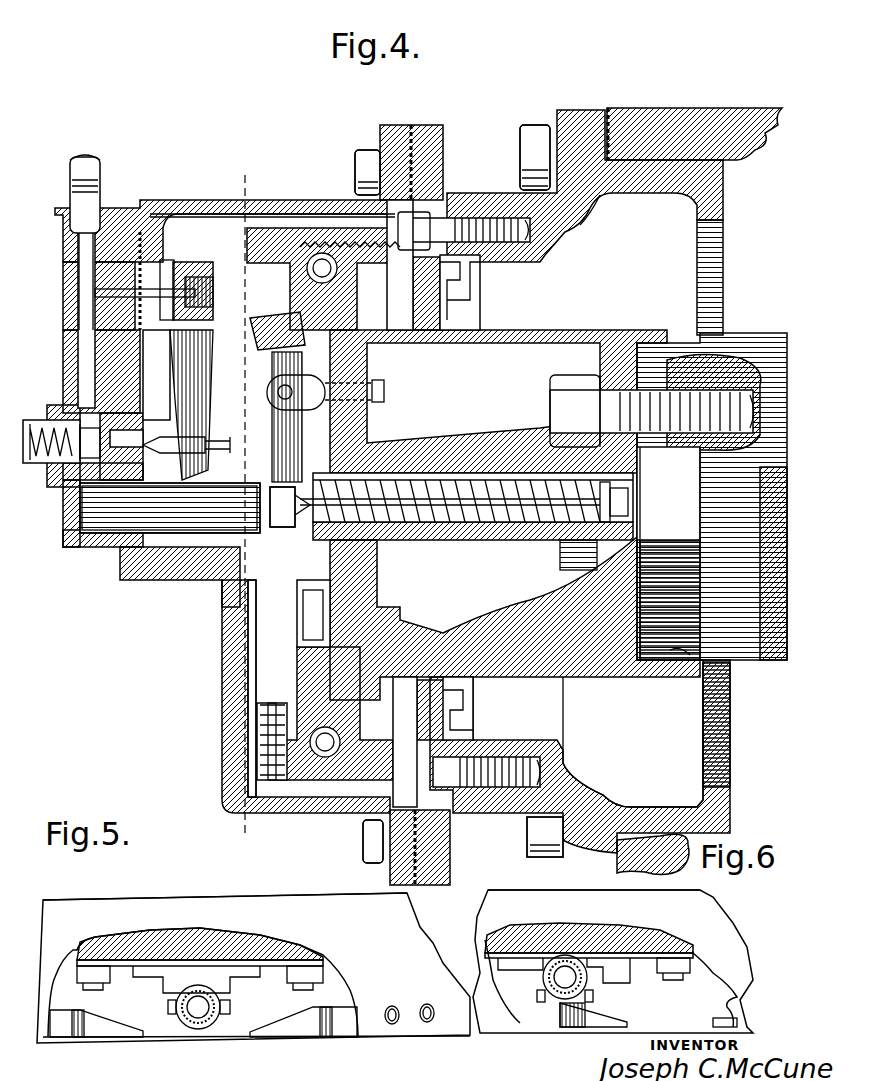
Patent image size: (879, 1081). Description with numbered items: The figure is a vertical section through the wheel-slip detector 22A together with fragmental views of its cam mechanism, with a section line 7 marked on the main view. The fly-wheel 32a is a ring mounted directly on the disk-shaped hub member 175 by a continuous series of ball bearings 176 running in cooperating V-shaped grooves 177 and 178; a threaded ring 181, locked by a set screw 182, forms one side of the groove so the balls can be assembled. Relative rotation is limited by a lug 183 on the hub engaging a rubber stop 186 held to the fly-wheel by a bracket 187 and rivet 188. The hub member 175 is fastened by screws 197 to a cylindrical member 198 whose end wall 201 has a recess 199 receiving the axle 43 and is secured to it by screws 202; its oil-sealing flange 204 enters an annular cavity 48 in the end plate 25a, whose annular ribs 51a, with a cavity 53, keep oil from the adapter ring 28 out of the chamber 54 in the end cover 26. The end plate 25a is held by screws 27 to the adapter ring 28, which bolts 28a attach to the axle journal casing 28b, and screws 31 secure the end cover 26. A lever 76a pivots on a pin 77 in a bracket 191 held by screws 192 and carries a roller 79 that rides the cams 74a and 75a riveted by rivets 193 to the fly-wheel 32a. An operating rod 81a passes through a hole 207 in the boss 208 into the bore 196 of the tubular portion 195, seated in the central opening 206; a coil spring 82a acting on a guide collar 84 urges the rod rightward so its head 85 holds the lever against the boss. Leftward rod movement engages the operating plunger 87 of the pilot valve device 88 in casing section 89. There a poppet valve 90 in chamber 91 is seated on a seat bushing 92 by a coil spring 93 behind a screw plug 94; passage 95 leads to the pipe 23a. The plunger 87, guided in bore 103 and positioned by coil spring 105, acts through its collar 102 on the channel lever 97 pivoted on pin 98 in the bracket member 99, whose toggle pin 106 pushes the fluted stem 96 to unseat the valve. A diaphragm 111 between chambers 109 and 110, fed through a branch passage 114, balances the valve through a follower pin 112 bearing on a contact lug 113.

In FIG. 4, the wheel-slip detector 22A is at (447, 103).
In FIG. 4, the pipe 23a is at (78, 176).
In FIG. 4, the end plate 25a is at (420, 289).
In FIG. 4, the end cover 26 is at (172, 204).
In FIG. 4, the screws 27 is at (470, 258).
In FIG. 4, the adapter ring 28 is at (483, 205).
In FIG. 4, the bolts 28a is at (530, 138).
In FIG. 4, the axle journal casing 28b is at (695, 122).
In FIG. 4, the screws 31 is at (358, 176).
In FIG. 4, the fly-wheel 32a is at (338, 226).
In FIG. 5, the fly-wheel 32a is at (120, 897).
In FIG. 6, the fly-wheel 32a is at (505, 910).
In FIG. 4, the axle 43 is at (745, 350).
In FIG. 4, the annular cavity 48 is at (480, 291).
In FIG. 4, the annular ribs 51a is at (467, 308).
In FIG. 4, the cavity 53 is at (695, 782).
In FIG. 4, the chamber 54 is at (205, 232).
In FIG. 4, the section line 7 is at (272, 178).
In FIG. 4, the cam 74a is at (254, 336).
In FIG. 5, the cam 74a is at (97, 1027).
In FIG. 6, the cam 74a is at (618, 1023).
In FIG. 5, the cam 75a is at (293, 1020).
In FIG. 6, the cam 75a is at (717, 1020).
In FIG. 4, the lever 76a is at (283, 430).
In FIG. 4, the pin 77 is at (278, 408).
In FIG. 5, the pin 77 is at (231, 1004).
In FIG. 4, the roller 79 is at (313, 286).
In FIG. 5, the roller 79 is at (193, 1024).
In FIG. 6, the roller 79 is at (590, 986).
In FIG. 4, the operating rod 81a is at (417, 504).
In FIG. 4, the coil spring 82a is at (380, 521).
In FIG. 4, the guide collar 84 is at (630, 484).
In FIG. 4, the head 85 is at (283, 497).
In FIG. 4, the operating plunger 87 is at (90, 507).
In FIG. 4, the pilot valve device 88 is at (56, 220).
In FIG. 4, the casing section 89 is at (113, 207).
In FIG. 4, the poppet valve 90 is at (97, 465).
In FIG. 4, the chamber 91 is at (80, 427).
In FIG. 4, the seat bushing 92 is at (107, 415).
In FIG. 4, the coil spring 93 is at (70, 470).
In FIG. 4, the screw plug 94 is at (48, 420).
In FIG. 4, the passage 95 is at (88, 250).
In FIG. 4, the fluted stem 96 is at (135, 432).
In FIG. 4, the lever 97 is at (200, 377).
In FIG. 4, the pin 98 is at (198, 338).
In FIG. 4, the bracket member 99 is at (156, 375).
In FIG. 4, the collar 102 is at (212, 530).
In FIG. 4, the bore 103 is at (97, 530).
In FIG. 4, the coil spring 105 is at (83, 527).
In FIG. 4, the toggle pin 106 is at (197, 425).
In FIG. 4, the chamber 109 is at (160, 268).
In FIG. 4, the chamber 110 is at (115, 296).
In FIG. 4, the diaphragm 111 is at (146, 265).
In FIG. 4, the follower pin 112 is at (200, 275).
In FIG. 4, the contact lug 113 is at (200, 294).
In FIG. 4, the branch passage 114 is at (95, 292).
In FIG. 4, the hub member 175 is at (376, 588).
In FIG. 4, the ball bearings 176 is at (306, 265).
In FIG. 4, the V-shaped groove 177 is at (308, 273).
In FIG. 4, the V-shaped groove 178 is at (317, 254).
In FIG. 4, the threaded ring 181 is at (370, 250).
In FIG. 4, the set screw 182 is at (410, 731).
In FIG. 4, the lug 183 is at (275, 625).
In FIG. 4, the rubber stop 186 is at (257, 720).
In FIG. 4, the bracket 187 is at (255, 742).
In FIG. 4, the rivet 188 is at (273, 765).
In FIG. 4, the bracket 191 is at (322, 378).
In FIG. 5, the bracket 191 is at (153, 967).
In FIG. 6, the bracket 191 is at (603, 962).
In FIG. 4, the screws 192 is at (384, 394).
In FIG. 5, the rivets 193 is at (423, 1027).
In FIG. 4, the tubular portion 195 is at (463, 528).
In FIG. 4, the bore 196 is at (505, 520).
In FIG. 4, the screws 197 is at (317, 612).
In FIG. 5, the screws 197 is at (100, 977).
In FIG. 6, the screws 197 is at (660, 968).
In FIG. 4, the cylindrical member 198 is at (567, 668).
In FIG. 4, the recess 199 is at (672, 652).
In FIG. 4, the end wall 201 is at (640, 567).
In FIG. 4, the screws 202 is at (553, 390).
In FIG. 4, the oil-sealing flange 204 is at (480, 300).
In FIG. 4, the central opening 206 is at (640, 532).
In FIG. 4, the hole 207 is at (305, 530).
In FIG. 4, the boss 208 is at (305, 548).